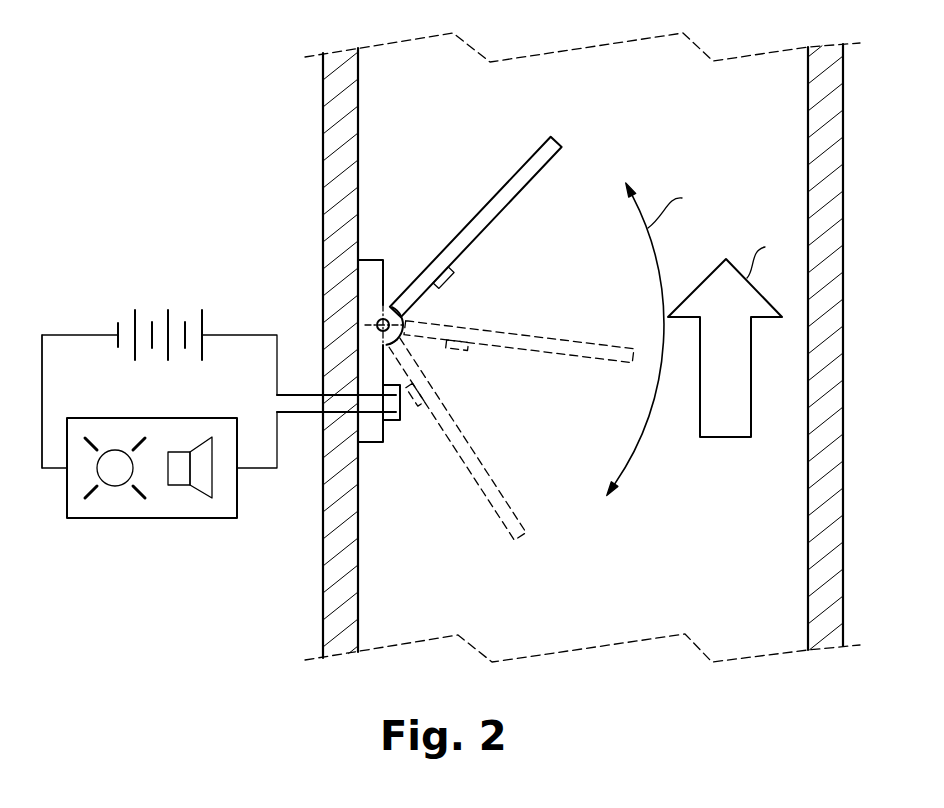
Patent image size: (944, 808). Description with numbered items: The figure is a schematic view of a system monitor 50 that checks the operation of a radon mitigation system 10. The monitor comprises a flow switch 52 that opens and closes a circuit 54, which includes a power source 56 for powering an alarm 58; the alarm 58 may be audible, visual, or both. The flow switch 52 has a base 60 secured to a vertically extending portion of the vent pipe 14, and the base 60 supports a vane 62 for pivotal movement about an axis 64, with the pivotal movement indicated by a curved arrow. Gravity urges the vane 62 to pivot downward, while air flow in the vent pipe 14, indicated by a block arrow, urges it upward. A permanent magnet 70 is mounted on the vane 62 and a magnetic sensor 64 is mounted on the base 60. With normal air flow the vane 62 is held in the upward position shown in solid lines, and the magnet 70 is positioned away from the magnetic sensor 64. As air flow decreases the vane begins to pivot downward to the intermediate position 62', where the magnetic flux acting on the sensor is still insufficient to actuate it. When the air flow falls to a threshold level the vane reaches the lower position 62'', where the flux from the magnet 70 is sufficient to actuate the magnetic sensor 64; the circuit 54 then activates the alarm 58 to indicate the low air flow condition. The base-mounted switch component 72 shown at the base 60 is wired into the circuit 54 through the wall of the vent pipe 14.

The radon mitigation system 10 is at (230, 62).
The vent pipe 14 is at (333, 122).
The system monitor 50 is at (218, 290).
The flow switch 52 is at (585, 331).
The circuit 54 is at (20, 443).
The power source 56 is at (133, 318).
The alarm 58 is at (190, 518).
The base 60 is at (368, 287).
The vane 62 is at (486, 227).
The vane in intermediate position 62' is at (518, 362).
The vane in threshold position 62'' is at (453, 441).
The axis / magnetic sensor 64 is at (400, 287).
The permanent magnet 70 is at (445, 280).
The sensor switch 72 is at (393, 415).